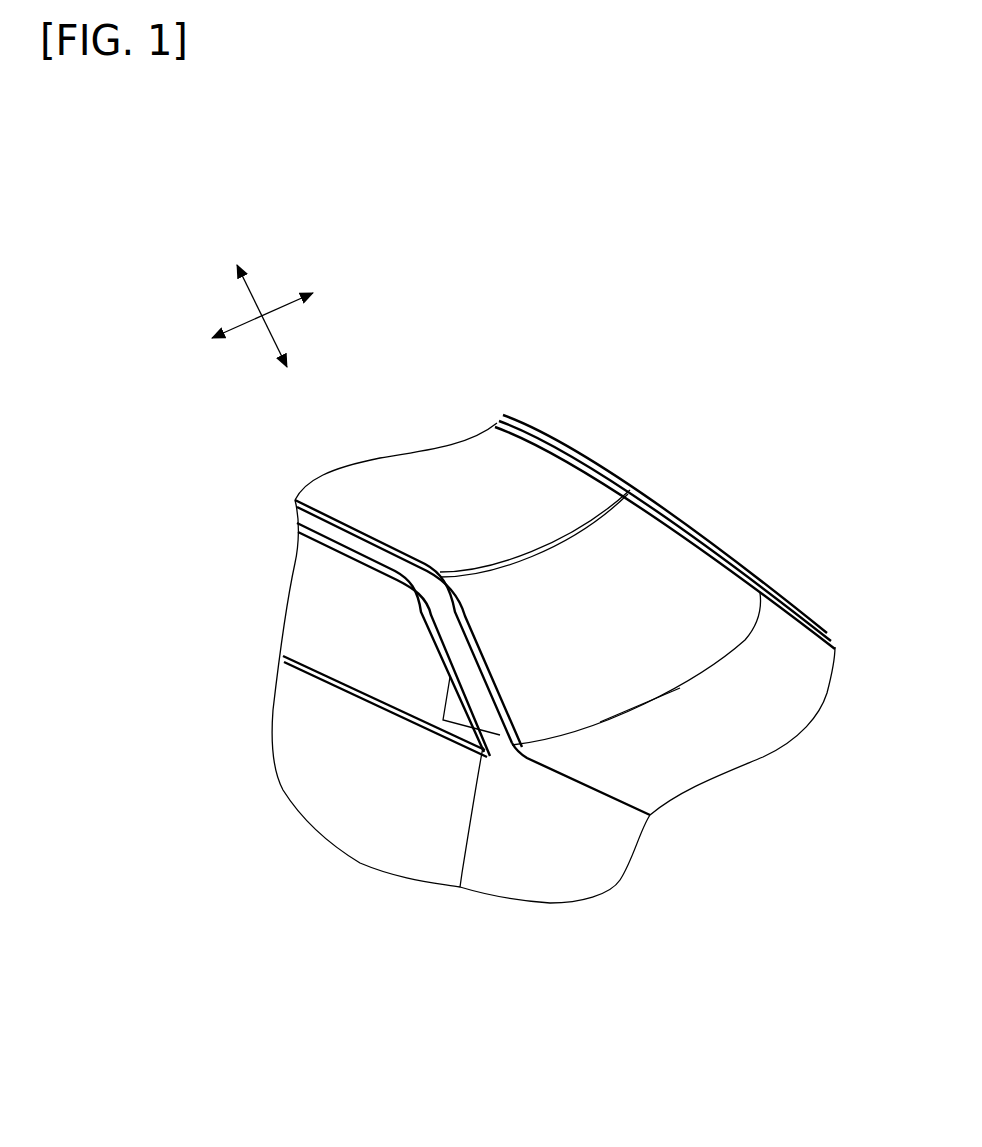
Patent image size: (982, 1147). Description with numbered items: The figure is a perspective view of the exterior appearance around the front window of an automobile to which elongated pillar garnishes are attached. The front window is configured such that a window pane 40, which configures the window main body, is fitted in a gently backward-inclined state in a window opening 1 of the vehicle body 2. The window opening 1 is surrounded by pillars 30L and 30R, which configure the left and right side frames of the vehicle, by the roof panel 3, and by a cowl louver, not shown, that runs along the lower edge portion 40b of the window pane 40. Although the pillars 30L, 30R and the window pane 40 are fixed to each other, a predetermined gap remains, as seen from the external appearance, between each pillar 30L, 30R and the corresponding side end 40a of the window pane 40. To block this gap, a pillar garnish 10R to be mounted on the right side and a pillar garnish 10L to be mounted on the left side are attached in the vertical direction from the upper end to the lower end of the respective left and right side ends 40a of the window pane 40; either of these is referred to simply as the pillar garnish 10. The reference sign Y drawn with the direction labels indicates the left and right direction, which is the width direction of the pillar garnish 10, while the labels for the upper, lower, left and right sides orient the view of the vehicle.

The window opening 1 is at (565, 541).
The vehicle body 2 is at (427, 432).
The roof panel 3 is at (523, 457).
The pillar garnish 10 is at (531, 615).
The pillar garnish to be mounted on a left side 10L is at (710, 537).
The pillar garnish to be mounted on a right side 10R is at (420, 610).
The pillar 30L is at (745, 560).
The pillar 30R is at (447, 675).
The window pane 40 is at (660, 528).
The side end 40a is at (758, 605).
The lower edge portion 40b is at (648, 707).
The left and right direction Y is at (281, 300).